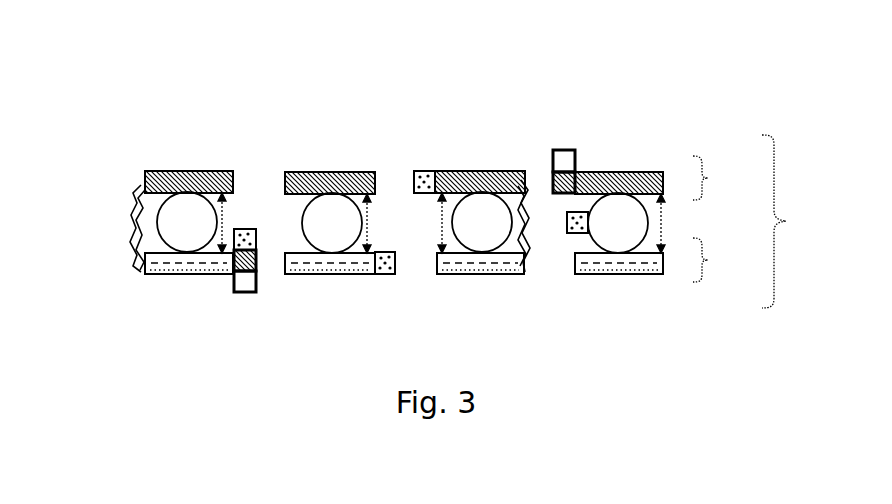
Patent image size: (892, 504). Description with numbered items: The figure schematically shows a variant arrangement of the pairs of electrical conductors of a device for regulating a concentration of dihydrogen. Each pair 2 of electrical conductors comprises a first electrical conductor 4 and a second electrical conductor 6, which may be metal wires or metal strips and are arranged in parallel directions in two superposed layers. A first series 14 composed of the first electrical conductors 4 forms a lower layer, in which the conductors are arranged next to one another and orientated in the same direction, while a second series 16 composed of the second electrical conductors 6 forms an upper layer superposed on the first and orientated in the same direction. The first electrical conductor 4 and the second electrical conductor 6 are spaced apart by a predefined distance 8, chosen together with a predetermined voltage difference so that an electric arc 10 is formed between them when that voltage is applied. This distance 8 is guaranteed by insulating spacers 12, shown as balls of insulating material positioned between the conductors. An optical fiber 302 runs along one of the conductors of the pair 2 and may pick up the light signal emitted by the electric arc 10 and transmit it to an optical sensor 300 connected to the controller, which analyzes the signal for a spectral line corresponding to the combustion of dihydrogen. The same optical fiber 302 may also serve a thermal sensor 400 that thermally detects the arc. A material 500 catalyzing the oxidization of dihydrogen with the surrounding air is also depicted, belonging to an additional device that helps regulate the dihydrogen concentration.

The pair of electrical conductors 2 is at (788, 221).
The first electrical conductor 4 is at (180, 277).
The second electrical conductor 6 is at (222, 168).
The predefined distance 8 is at (454, 223).
The electric arc 10 is at (132, 200).
The insulating spacer 12 is at (184, 212).
The first series 14 is at (723, 260).
The second series 16 is at (723, 178).
The optical sensor 300 is at (412, 201).
The optical fiber 302 is at (257, 263).
The thermal sensor 400 is at (617, 63).
The material 500 is at (258, 236).